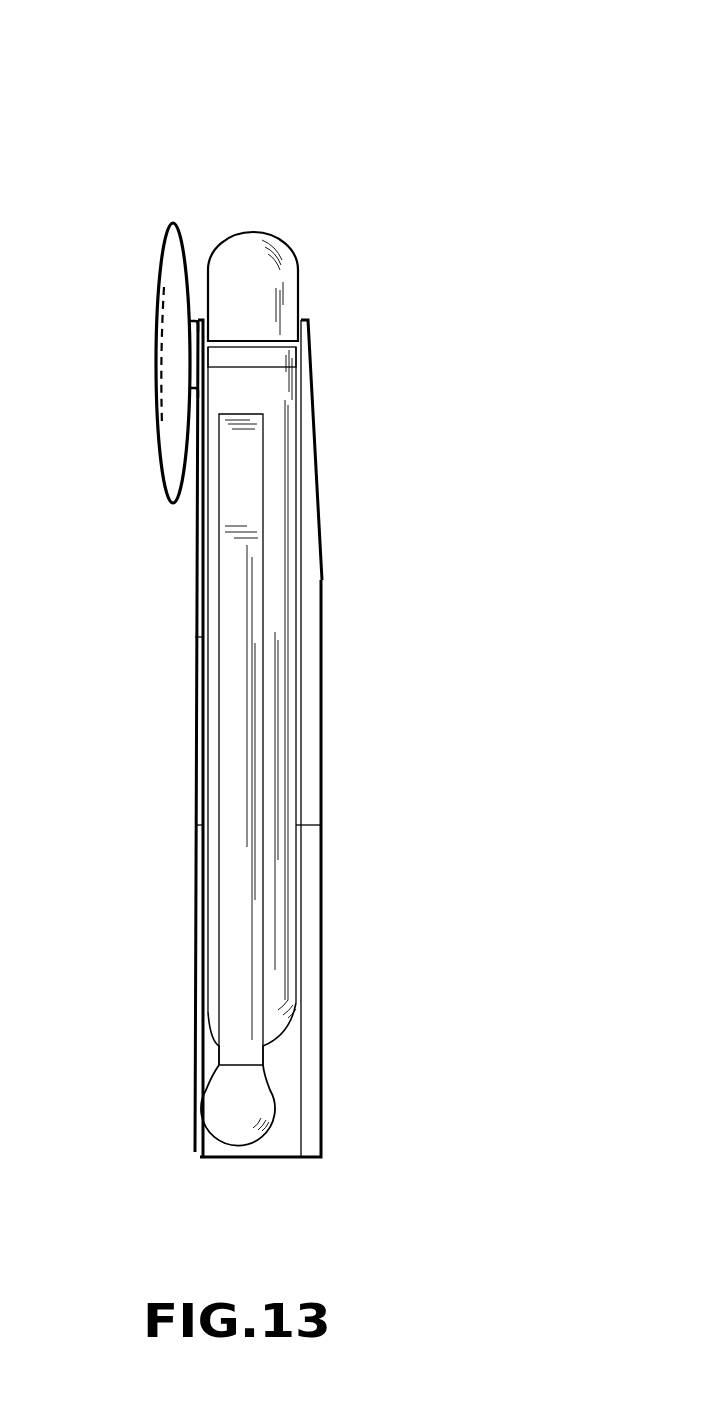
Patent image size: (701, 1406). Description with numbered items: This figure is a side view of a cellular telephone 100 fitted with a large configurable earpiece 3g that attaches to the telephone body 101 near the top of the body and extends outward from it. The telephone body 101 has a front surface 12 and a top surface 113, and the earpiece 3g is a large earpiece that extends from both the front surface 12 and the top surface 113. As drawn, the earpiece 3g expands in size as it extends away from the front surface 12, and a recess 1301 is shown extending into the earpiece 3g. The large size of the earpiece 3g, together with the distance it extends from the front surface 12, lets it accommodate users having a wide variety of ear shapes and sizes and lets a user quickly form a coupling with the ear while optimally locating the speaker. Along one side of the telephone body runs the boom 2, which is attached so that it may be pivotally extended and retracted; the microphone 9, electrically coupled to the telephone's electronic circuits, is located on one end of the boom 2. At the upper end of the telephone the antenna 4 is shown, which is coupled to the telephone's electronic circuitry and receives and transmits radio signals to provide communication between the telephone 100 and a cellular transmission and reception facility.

The telephone 100 is at (357, 68).
The telephone body 101 is at (309, 1082).
The top surface 113 is at (307, 316).
The front surface 12 is at (173, 694).
The boom 2 is at (224, 955).
The microphone 9 is at (256, 460).
The antenna 4 is at (232, 250).
The earpiece 3g is at (166, 278).
The recess 1301 is at (163, 358).